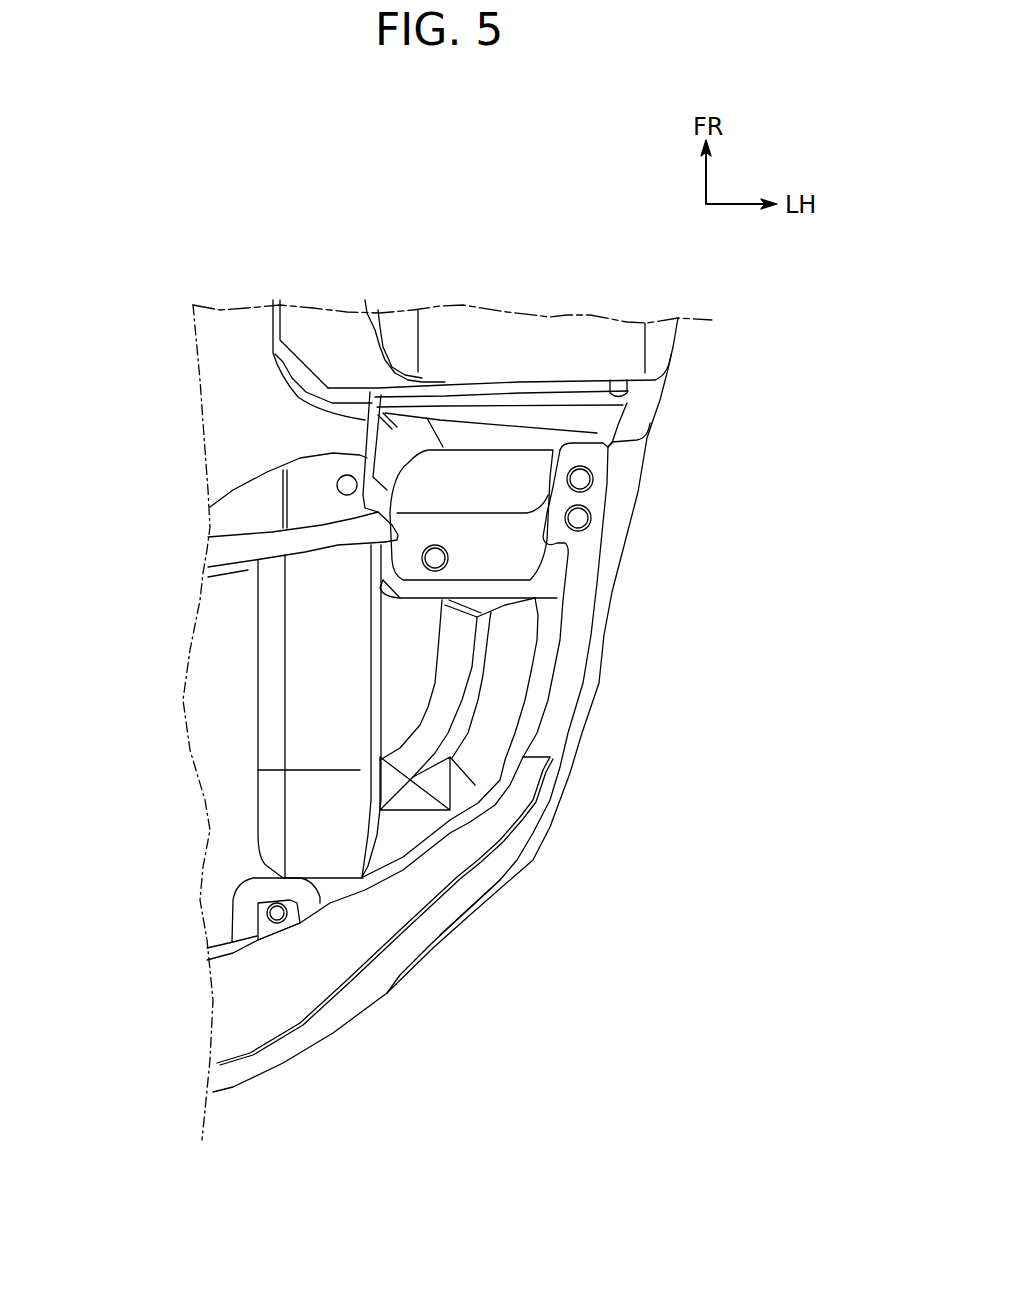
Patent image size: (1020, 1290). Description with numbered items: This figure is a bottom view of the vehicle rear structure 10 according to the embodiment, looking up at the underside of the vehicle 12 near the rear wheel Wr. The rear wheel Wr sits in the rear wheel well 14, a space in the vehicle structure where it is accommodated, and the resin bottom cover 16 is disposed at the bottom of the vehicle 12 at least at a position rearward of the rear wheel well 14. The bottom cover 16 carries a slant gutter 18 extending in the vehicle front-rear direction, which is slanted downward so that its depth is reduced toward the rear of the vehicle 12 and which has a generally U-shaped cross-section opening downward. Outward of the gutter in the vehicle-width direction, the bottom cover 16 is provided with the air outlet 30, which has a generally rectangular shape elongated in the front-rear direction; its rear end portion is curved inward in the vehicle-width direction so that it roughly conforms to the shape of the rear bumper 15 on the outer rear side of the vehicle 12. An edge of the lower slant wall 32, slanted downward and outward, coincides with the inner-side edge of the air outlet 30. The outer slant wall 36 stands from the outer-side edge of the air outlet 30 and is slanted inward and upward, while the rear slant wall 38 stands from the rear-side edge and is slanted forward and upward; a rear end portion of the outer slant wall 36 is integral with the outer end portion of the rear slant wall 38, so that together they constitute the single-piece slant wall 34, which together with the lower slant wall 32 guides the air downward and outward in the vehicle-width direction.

The vehicle rear structure 10 is at (541, 881).
The vehicle 12 is at (302, 1058).
The rear wheel well 14 is at (362, 300).
The rear bumper 15 is at (427, 973).
The bottom cover 16 is at (240, 803).
The slant gutter 18 is at (200, 655).
The air outlet 30 is at (466, 696).
The lower slant wall 32 is at (445, 652).
The slant wall 34 is at (486, 749).
The outer slant wall 36 is at (518, 626).
The rear slant wall 38 is at (413, 797).
The rear wheel Wr is at (613, 352).